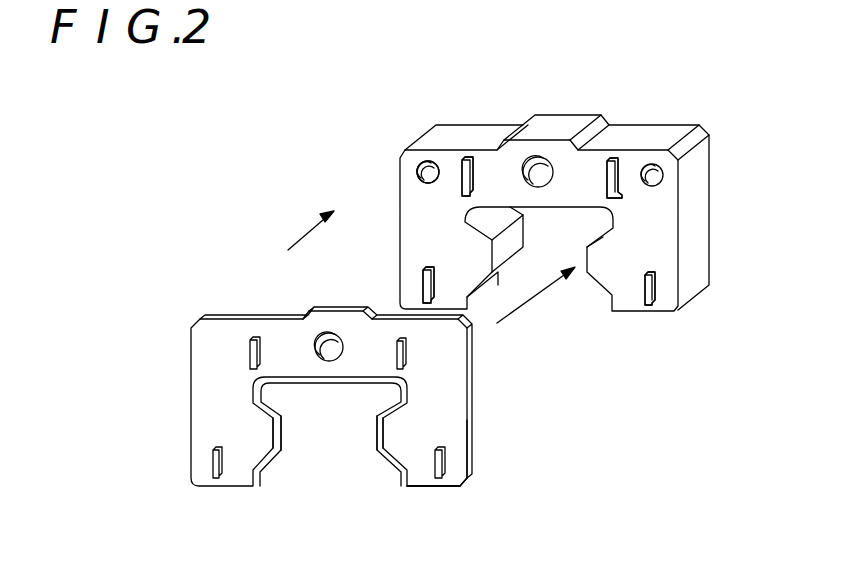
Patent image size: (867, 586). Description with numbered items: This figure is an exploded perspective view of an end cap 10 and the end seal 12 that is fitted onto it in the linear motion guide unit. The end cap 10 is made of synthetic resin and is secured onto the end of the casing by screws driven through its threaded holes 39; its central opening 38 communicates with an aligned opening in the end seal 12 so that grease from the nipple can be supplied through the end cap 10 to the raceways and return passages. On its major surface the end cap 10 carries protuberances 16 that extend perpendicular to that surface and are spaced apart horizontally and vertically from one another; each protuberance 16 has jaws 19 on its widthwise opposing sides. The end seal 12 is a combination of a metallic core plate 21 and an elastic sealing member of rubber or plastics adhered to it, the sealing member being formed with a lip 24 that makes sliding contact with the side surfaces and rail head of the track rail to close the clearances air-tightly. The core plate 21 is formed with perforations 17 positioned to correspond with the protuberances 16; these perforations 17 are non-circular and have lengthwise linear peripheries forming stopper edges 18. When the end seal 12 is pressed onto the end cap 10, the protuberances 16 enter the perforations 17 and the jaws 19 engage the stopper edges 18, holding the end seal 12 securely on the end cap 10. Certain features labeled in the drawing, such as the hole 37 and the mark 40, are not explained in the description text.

The end cap 10 is at (636, 137).
The end seal 12 is at (340, 402).
The protuberance 16 is at (468, 190).
The perforation 17 is at (257, 340).
The stopper edge 18 is at (258, 340).
The jaw 19 is at (463, 160).
The core plate 21 is at (418, 458).
The lip 24 is at (288, 430).
The mounting hole of second plate 37 is at (332, 333).
The opening 38 is at (545, 158).
The threaded hole 39 is at (417, 173).
The countersink of hole 40 is at (424, 164).